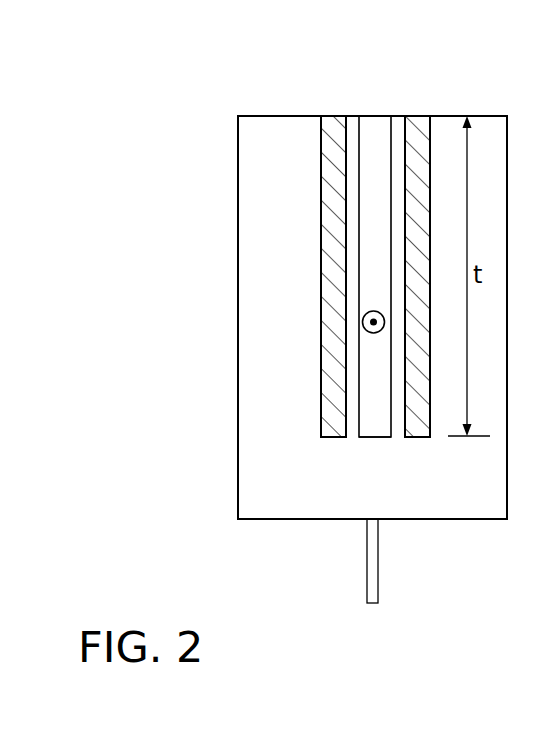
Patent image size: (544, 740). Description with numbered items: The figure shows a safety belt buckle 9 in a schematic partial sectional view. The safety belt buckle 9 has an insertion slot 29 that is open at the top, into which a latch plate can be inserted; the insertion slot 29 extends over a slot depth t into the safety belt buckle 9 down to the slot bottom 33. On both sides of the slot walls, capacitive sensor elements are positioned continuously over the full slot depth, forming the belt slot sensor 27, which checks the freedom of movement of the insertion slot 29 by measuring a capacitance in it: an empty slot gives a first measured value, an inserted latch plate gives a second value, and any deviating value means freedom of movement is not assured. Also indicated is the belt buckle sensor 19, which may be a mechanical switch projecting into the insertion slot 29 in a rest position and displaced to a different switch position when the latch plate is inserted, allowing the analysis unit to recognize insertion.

The safety belt buckle 9 is at (238, 247).
The belt slot sensor 27 is at (413, 132).
The insertion slot 29 is at (377, 192).
The belt buckle sensor 19 is at (373, 322).
The slot bottom 33 is at (375, 436).